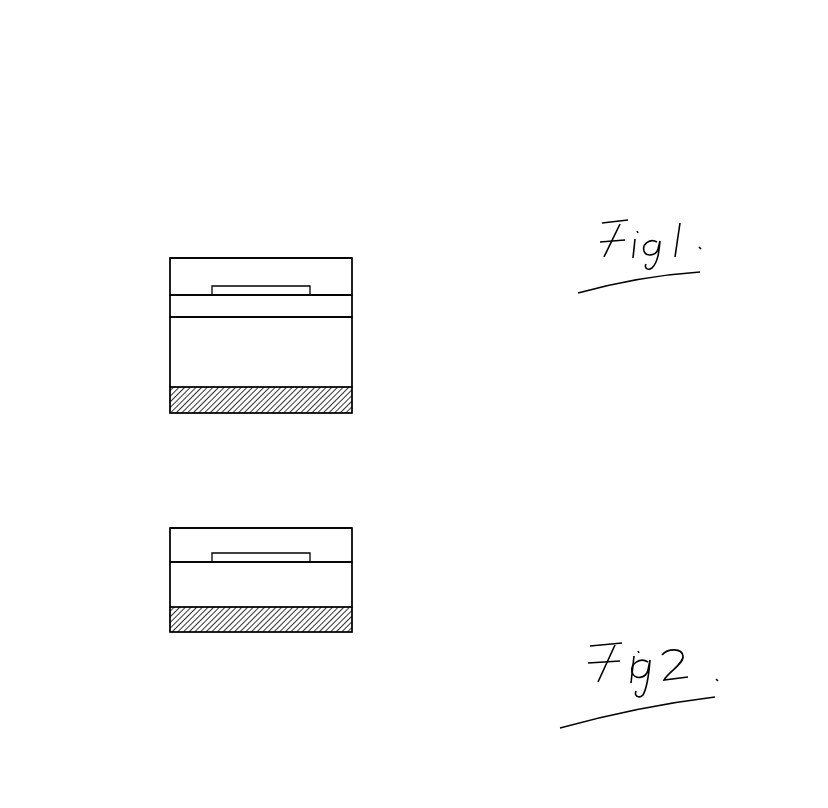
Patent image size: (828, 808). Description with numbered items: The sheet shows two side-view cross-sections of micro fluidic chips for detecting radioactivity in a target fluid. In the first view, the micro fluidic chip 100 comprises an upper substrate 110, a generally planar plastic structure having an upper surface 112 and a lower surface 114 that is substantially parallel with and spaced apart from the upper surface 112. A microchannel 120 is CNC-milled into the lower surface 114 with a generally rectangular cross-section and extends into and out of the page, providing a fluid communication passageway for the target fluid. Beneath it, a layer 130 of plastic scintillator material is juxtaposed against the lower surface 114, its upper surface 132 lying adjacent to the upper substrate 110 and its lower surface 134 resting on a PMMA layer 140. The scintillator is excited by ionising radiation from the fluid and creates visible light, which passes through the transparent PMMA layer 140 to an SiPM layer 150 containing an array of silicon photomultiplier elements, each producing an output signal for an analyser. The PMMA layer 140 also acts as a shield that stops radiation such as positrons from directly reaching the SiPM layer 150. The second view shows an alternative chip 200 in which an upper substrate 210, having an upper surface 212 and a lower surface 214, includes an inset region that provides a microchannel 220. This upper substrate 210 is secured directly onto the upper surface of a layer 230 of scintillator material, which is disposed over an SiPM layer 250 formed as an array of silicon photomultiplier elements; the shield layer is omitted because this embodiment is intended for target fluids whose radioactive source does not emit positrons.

In FIG. 1, the micro fluidic chip 100 is at (348, 92).
In FIG. 1, the upper substrate 110 is at (167, 266).
In FIG. 1, the upper surface 112 is at (325, 258).
In FIG. 1, the lower surface 114 is at (338, 296).
In FIG. 1, the microchannel 120 is at (230, 283).
In FIG. 1, the layer of scintillator material 130 is at (167, 305).
In FIG. 1, the upper surface 132 is at (320, 294).
In FIG. 1, the lower surface 134 is at (330, 320).
In FIG. 1, the PMMA layer 140 is at (167, 358).
In FIG. 1, the SiPM layer 150 is at (167, 400).
In FIG. 2, the chip 200 is at (365, 488).
In FIG. 2, the upper substrate 210 is at (167, 535).
In FIG. 2, the upper surface 212 is at (288, 495).
In FIG. 2, the lower surface 214 is at (333, 562).
In FIG. 2, the microchannel 220 is at (228, 550).
In FIG. 2, the layer of scintillator material 230 is at (167, 580).
In FIG. 2, the SiPM layer 250 is at (167, 622).